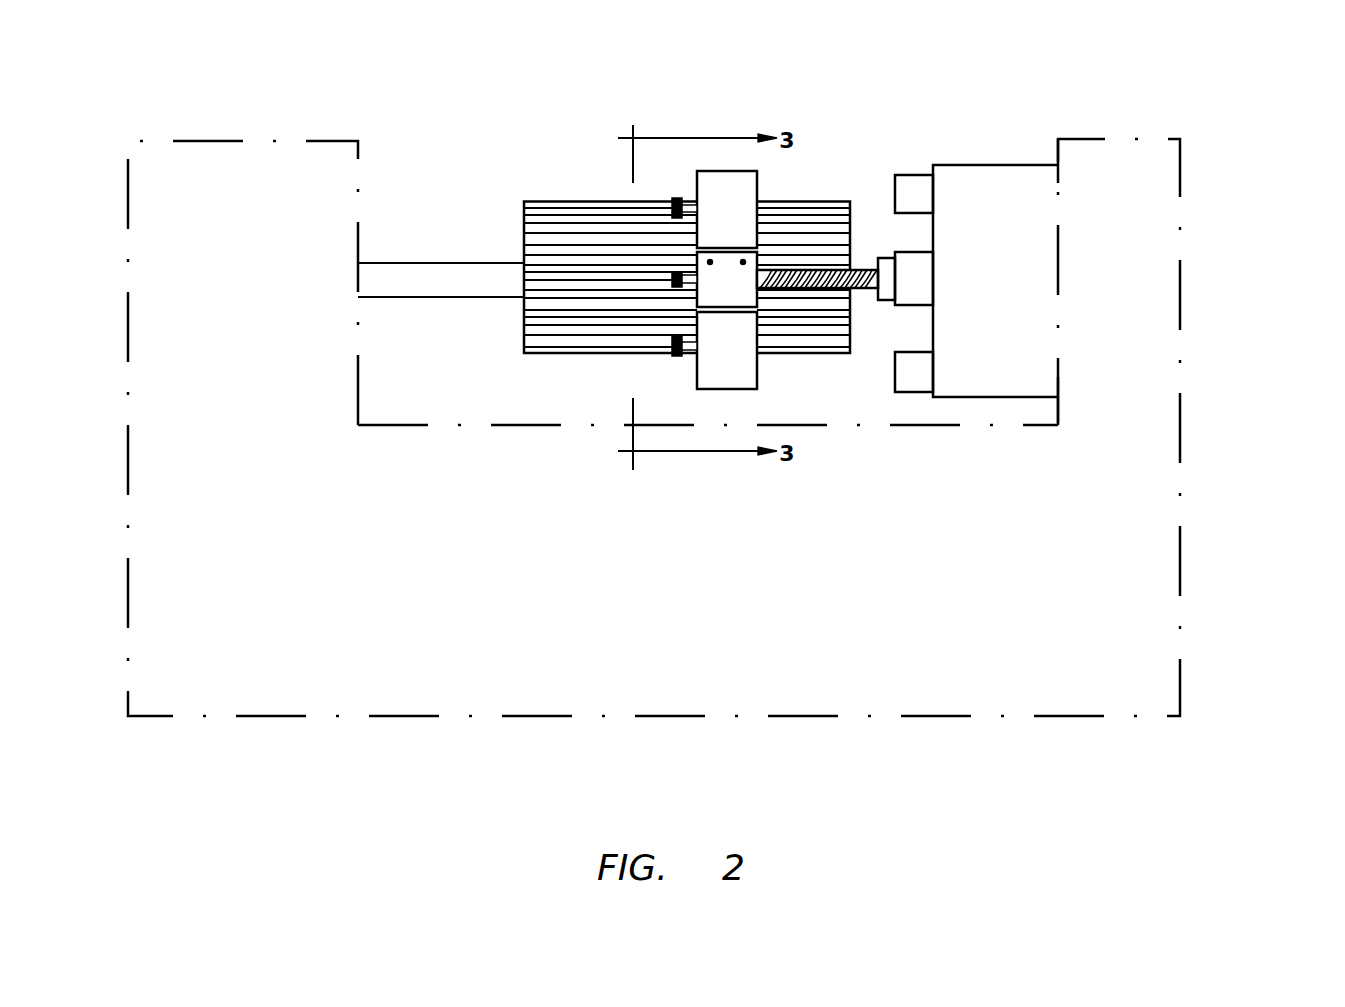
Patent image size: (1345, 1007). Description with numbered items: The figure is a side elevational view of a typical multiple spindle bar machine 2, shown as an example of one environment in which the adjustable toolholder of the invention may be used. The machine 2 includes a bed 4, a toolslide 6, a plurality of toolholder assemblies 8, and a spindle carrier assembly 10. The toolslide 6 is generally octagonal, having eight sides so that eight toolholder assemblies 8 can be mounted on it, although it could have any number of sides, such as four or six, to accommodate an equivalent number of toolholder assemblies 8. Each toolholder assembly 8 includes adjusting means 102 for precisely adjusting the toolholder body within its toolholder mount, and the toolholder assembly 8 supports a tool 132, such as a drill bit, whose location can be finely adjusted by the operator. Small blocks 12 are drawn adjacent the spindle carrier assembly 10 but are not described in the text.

The multiple spindle bar machine 2 is at (1222, 557).
The bed 4 is at (537, 440).
The toolslide 6 is at (580, 200).
The toolholder assemblies 8 is at (730, 230).
The spindle carrier assembly 10 is at (988, 165).
The bearing blocks 12 is at (912, 183).
The adjusting means 102 is at (675, 210).
The tool 132 is at (866, 258).